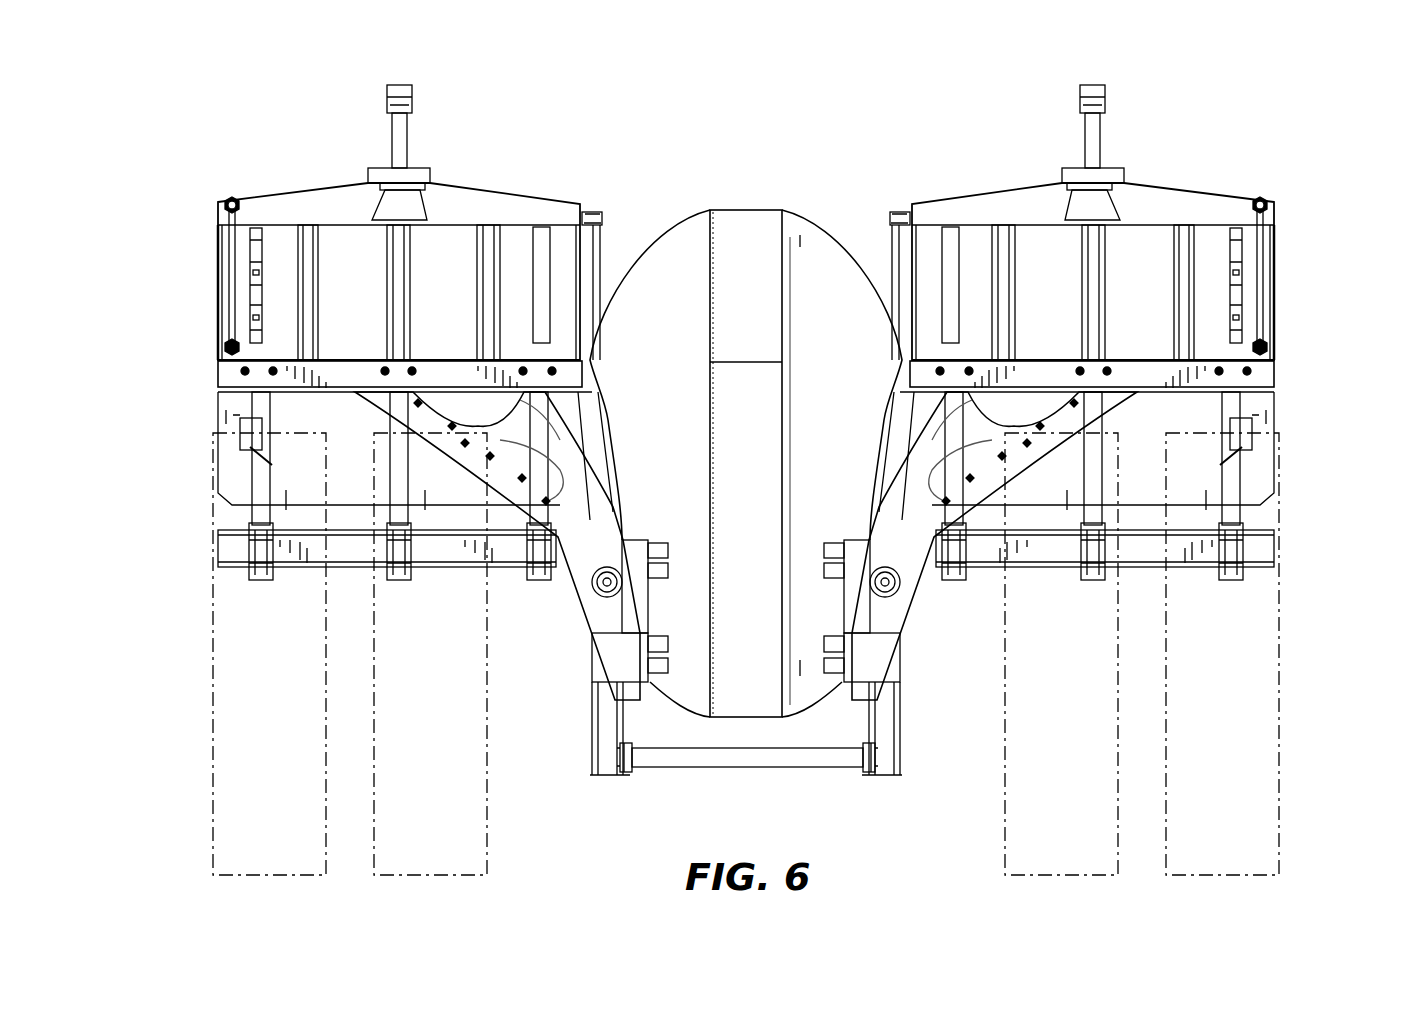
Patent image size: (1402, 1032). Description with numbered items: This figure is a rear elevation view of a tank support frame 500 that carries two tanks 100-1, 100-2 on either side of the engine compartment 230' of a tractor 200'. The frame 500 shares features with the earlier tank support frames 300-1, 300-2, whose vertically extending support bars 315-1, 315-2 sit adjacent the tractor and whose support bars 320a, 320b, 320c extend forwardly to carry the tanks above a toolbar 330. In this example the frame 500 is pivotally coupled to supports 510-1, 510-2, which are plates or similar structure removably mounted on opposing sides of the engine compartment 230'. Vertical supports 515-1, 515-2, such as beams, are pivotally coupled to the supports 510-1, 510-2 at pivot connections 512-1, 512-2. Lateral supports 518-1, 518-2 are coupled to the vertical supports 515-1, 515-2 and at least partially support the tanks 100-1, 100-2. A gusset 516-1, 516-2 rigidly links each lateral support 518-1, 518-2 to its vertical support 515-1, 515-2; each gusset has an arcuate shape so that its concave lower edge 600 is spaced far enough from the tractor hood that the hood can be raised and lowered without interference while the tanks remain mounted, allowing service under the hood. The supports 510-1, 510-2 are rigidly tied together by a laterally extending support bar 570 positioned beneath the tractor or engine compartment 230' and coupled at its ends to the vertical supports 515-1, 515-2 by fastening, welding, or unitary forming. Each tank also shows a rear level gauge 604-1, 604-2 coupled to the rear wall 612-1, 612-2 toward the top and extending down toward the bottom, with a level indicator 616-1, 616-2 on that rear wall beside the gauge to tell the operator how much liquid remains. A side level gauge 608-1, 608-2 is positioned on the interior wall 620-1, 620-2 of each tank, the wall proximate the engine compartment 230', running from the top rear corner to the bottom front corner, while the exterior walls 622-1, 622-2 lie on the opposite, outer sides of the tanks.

The tank 100-1 is at (382, 222).
The tank 100-2 is at (1090, 210).
The tractor 200' is at (746, 409).
The engine compartment 230' is at (734, 427).
The tank support frame 300-1 is at (205, 495).
The tank support frame 300-2 is at (1285, 495).
The support bar 315-1 is at (590, 480).
The support bar 315-2 is at (902, 480).
The support bar 320a is at (545, 462).
The support bar 320b is at (397, 453).
The support bar 320c is at (245, 430).
The toolbar 330 is at (1260, 550).
The tank support frame 500 is at (165, 575).
The support 510-1 is at (632, 650).
The support 510-2 is at (862, 650).
The pivot connection 512-1 is at (600, 592).
The pivot connection 512-2 is at (892, 592).
The vertical support 515-1 is at (604, 750).
The vertical support 515-2 is at (886, 750).
The gusset 516-1 is at (448, 442).
The gusset 516-2 is at (1045, 475).
The lateral support 518-1 is at (232, 377).
The lateral support 518-2 is at (1262, 378).
The support bar 570 is at (757, 760).
The lower surface or edge 600 is at (450, 455).
The rear level gauge 604-1 is at (218, 255).
The rear level gauge 604-2 is at (1270, 270).
The side level gauge 608-1 is at (608, 210).
The side level gauge 608-2 is at (885, 213).
The rear wall 612-1 is at (440, 250).
The rear wall 612-2 is at (1133, 245).
The level indicator 616-1 is at (270, 255).
The level indicator 616-2 is at (1222, 255).
The interior wall 620-1 is at (592, 260).
The interior wall 620-2 is at (902, 250).
The exterior wall 622-1 is at (230, 322).
The exterior wall 622-2 is at (1262, 325).